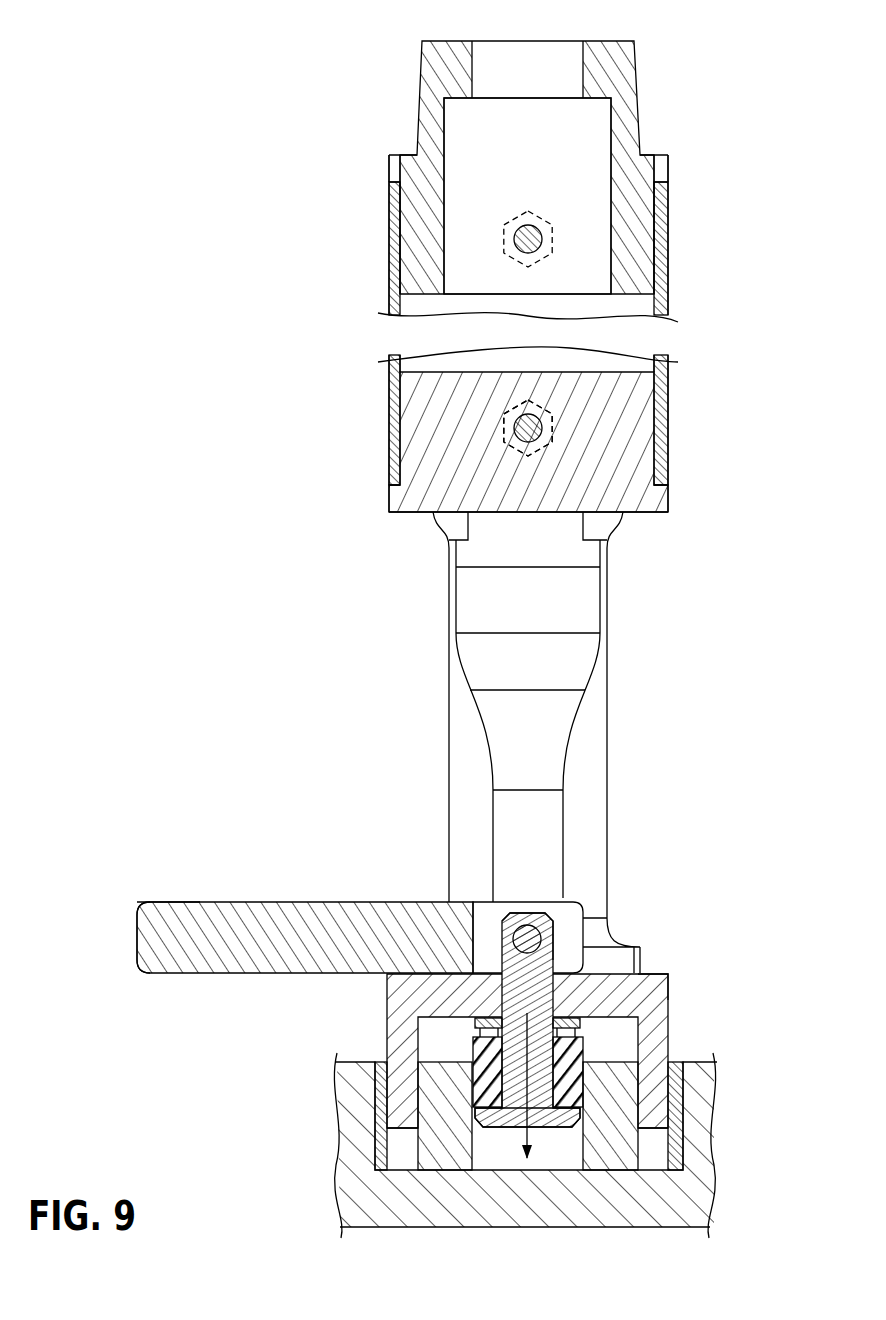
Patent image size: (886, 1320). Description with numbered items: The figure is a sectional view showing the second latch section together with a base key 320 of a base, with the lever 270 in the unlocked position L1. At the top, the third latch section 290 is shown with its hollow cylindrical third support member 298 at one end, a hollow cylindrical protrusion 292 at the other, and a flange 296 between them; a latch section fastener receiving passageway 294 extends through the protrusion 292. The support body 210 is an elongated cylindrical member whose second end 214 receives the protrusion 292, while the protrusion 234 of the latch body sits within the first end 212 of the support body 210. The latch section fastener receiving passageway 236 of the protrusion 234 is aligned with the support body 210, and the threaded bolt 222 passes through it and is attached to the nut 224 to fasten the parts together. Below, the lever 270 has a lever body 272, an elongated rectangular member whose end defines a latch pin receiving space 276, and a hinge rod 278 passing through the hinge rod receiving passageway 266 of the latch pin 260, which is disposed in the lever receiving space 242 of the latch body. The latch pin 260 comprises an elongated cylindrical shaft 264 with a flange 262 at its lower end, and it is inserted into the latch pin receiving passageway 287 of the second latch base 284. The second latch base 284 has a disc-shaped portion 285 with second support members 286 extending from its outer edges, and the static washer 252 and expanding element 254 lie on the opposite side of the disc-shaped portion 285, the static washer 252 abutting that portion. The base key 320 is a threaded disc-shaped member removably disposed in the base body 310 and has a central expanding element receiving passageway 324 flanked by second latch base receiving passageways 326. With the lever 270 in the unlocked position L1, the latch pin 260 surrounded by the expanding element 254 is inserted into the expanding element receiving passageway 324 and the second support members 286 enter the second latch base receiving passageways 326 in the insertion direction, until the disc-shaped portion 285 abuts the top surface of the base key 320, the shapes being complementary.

The third latch section 290 is at (549, 260).
The third support member 298 is at (417, 83).
The latch section fastener receiving passageway 294 is at (513, 230).
The flange 296 is at (668, 162).
The second end 214 is at (668, 180).
The protrusion 292 is at (654, 228).
The support body 210 is at (660, 285).
The threaded bolt 222 is at (513, 240).
The nut 224 is at (515, 262).
The protrusion 234 is at (654, 430).
The first end 212 is at (660, 485).
The latch section fastener receiving passageway 236 is at (515, 440).
The lever receiving space 242 is at (547, 705).
The lever 270 is at (320, 892).
The lever body 272 is at (207, 950).
The unlocked position L1 is at (178, 890).
The latch pin receiving space 276 is at (488, 917).
The latch pin receiving passageway 287 is at (618, 945).
The second latch base 284 is at (678, 990).
The disc-shaped portion 285 is at (653, 980).
The second support members 286 is at (660, 1080).
The expanding element receiving passageway 324 is at (468, 1078).
The shaft 264 is at (510, 995).
The hinge rod receiving passageway 266 is at (560, 945).
The hinge rod 278 is at (532, 928).
The flange 262 is at (555, 1120).
The static washer 252 is at (580, 1023).
The expanding element 254 is at (577, 1080).
The latch pin 260 is at (567, 1140).
The base body 310 is at (350, 1197).
The base key 320 is at (376, 1056).
The second latch base receiving passageways 326 is at (402, 1142).